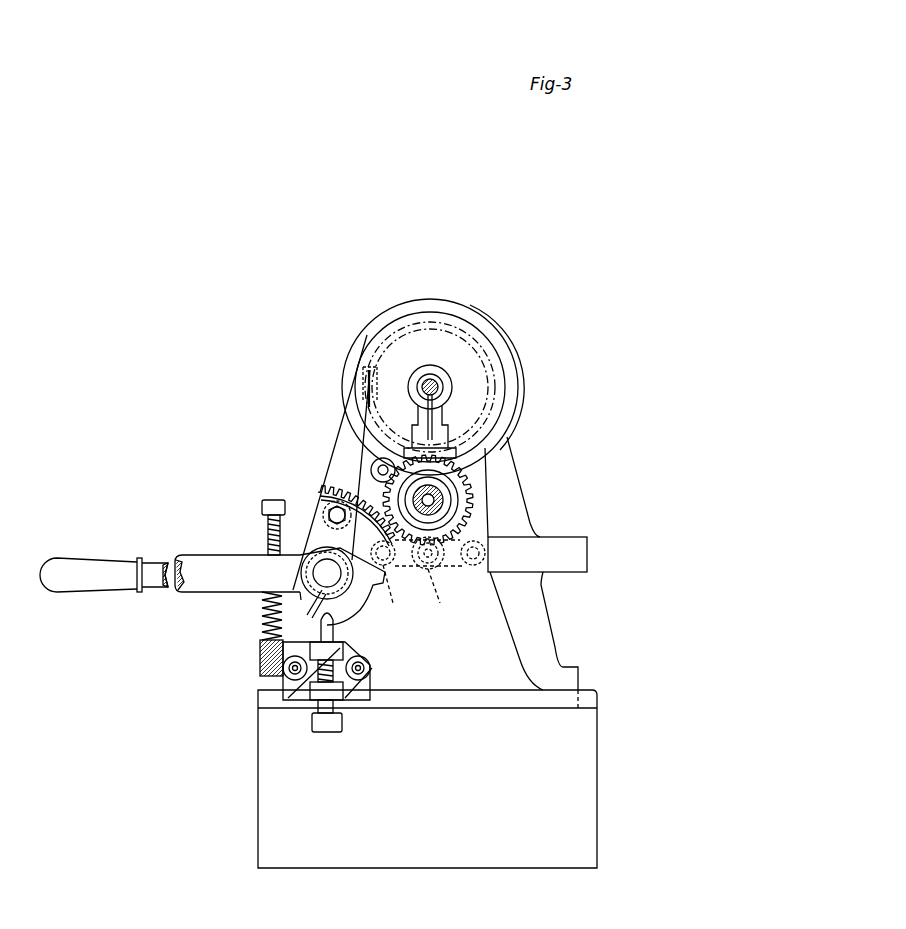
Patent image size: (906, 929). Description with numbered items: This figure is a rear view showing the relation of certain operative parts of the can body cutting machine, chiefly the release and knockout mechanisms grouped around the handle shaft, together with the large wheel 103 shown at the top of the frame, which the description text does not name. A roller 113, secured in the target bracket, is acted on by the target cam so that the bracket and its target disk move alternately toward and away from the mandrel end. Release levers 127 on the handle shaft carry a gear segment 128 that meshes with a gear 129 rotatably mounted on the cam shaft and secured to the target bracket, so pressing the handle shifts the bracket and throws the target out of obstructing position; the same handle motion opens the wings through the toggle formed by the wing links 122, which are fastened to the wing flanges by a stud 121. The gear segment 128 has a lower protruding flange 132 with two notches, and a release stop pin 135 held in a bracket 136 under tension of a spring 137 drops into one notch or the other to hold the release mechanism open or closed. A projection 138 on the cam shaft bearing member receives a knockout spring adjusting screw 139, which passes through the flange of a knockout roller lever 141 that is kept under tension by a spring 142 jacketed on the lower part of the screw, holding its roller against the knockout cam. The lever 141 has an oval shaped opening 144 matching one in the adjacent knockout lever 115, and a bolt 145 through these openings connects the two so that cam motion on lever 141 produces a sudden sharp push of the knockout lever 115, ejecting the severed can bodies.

The pulley wheel 103 is at (380, 467).
The roller 113 is at (428, 500).
The knockout lever 115 is at (355, 458).
The stud 121 is at (487, 554).
The wing link 122 is at (438, 585).
The release lever 127 is at (127, 580).
The gear segment 128 is at (325, 493).
The gear 129 is at (432, 600).
The protruding flange 132 is at (355, 603).
The release stop pin 135 is at (291, 687).
The bracket 136 is at (291, 688).
The spring 137 is at (317, 701).
The projection 138 is at (259, 661).
The knockout spring adjusting screw 139 is at (267, 531).
The knockout roller lever 141 is at (272, 578).
The spring 142 is at (262, 624).
The oval shaped opening 144 is at (322, 527).
The bolt 145 is at (330, 519).